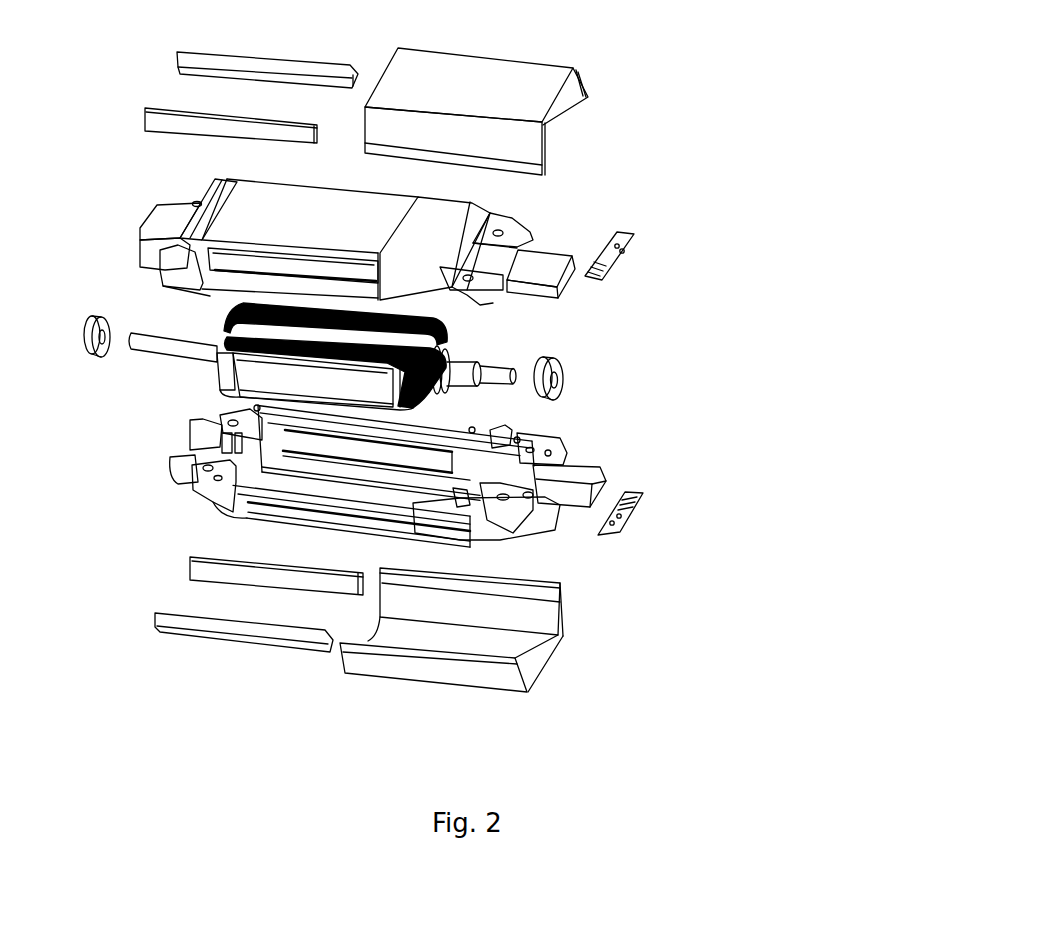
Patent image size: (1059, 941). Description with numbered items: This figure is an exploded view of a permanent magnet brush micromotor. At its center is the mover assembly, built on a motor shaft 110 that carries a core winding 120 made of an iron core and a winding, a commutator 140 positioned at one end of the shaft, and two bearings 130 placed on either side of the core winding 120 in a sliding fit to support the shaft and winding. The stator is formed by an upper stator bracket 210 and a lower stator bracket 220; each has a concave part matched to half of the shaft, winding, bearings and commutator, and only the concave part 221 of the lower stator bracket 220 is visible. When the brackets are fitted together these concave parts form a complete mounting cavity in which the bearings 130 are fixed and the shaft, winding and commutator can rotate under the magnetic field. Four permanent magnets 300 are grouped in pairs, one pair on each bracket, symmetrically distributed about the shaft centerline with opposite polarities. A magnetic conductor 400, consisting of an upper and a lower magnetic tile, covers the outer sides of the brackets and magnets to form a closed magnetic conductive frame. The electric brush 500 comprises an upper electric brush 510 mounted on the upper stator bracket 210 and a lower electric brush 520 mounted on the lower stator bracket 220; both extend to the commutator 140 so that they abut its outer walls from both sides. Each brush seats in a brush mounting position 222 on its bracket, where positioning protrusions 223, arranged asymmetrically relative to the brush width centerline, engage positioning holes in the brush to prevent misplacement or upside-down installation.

The motor shaft 110 is at (197, 345).
The core winding 120 is at (293, 380).
The bearing 130 is at (88, 340).
The commutator 140 is at (463, 367).
The upper stator bracket 210 is at (375, 222).
The lower stator bracket 220 is at (240, 518).
The concave part 221 is at (287, 462).
The brush mounting position 222 is at (470, 517).
The positioning protrusion 223 is at (478, 500).
The permanent magnet 300 is at (222, 58).
The magnetic conductor 400 is at (498, 83).
The electric brush 500 is at (730, 233).
The upper electric brush 510 is at (632, 240).
The lower electric brush 520 is at (617, 538).